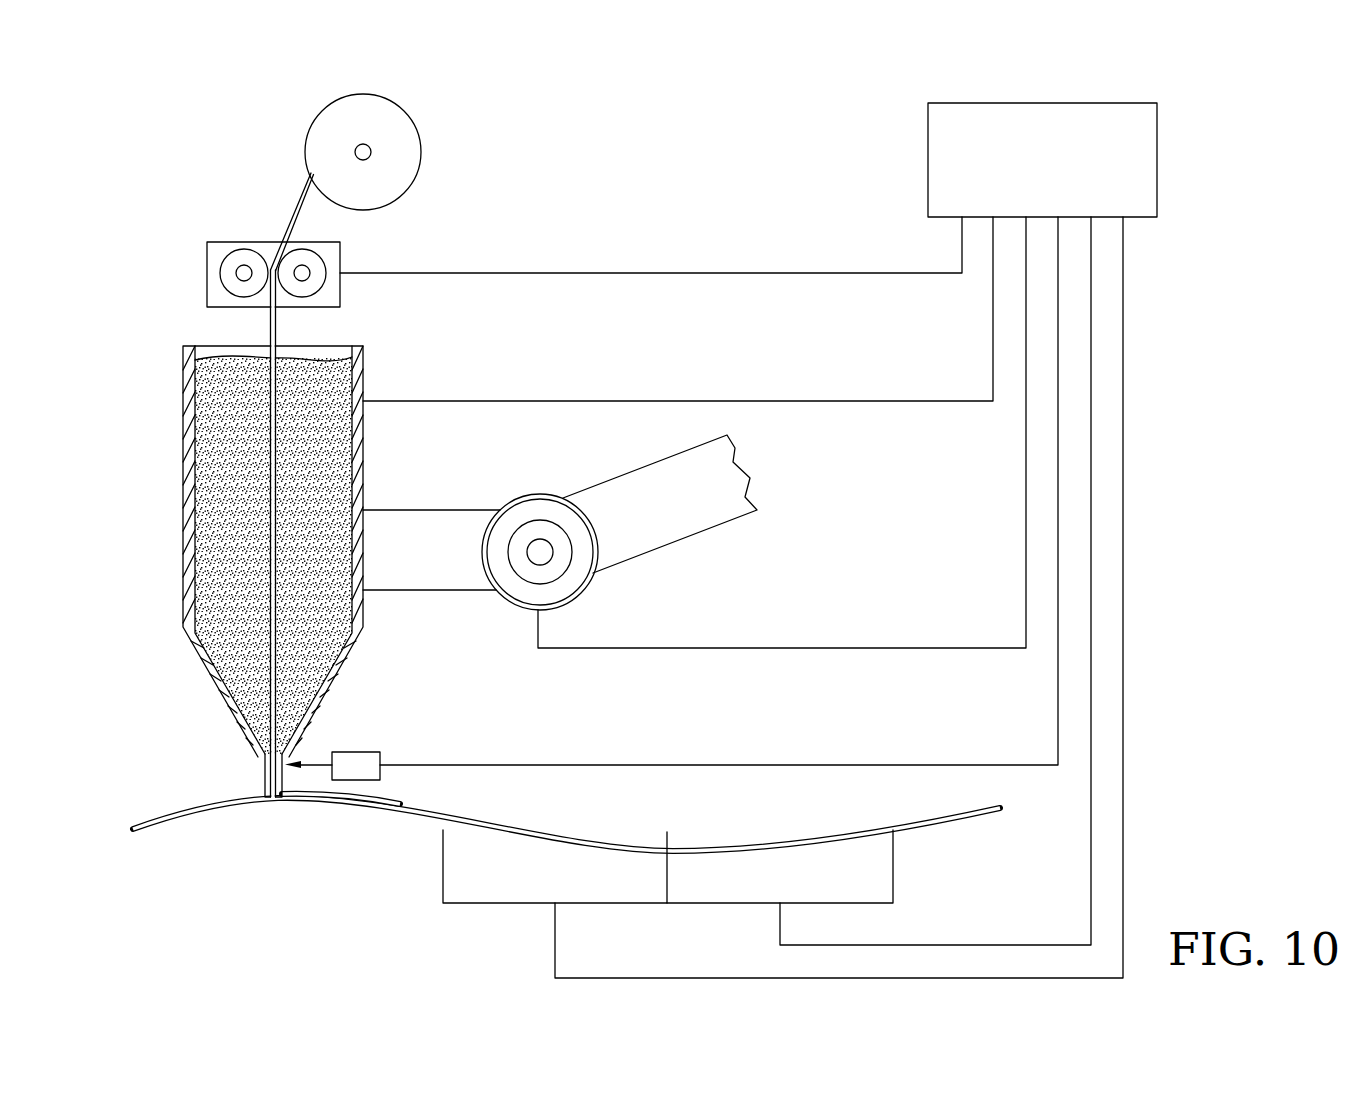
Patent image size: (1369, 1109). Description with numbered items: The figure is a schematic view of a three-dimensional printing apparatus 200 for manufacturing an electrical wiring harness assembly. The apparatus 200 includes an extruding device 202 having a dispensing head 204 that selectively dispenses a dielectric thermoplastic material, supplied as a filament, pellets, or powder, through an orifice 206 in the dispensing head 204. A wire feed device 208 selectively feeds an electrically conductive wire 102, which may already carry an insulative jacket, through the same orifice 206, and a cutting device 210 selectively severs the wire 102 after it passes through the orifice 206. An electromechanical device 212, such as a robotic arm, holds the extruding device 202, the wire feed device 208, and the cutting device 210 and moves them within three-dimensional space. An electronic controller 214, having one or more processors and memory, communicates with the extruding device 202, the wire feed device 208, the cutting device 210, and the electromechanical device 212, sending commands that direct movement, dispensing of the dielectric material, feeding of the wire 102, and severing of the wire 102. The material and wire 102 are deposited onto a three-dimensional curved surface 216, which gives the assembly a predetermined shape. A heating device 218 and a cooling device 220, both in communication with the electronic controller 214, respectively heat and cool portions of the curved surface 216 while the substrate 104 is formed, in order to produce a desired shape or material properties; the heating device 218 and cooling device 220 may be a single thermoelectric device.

The apparatus 200 is at (203, 119).
The wire feed device 208 is at (222, 242).
The wire 102 is at (266, 334).
The extruding device 202 is at (188, 478).
The dispensing head 204 is at (208, 668).
The orifice 206 is at (263, 760).
The cutting device 210 is at (372, 752).
The substrate 104 is at (402, 806).
The 3D curved surface 216 is at (205, 820).
The heating device 218 is at (460, 905).
The cooling device 220 is at (893, 882).
The electromechanical device 212 is at (520, 497).
The electronic controller 214 is at (1138, 217).